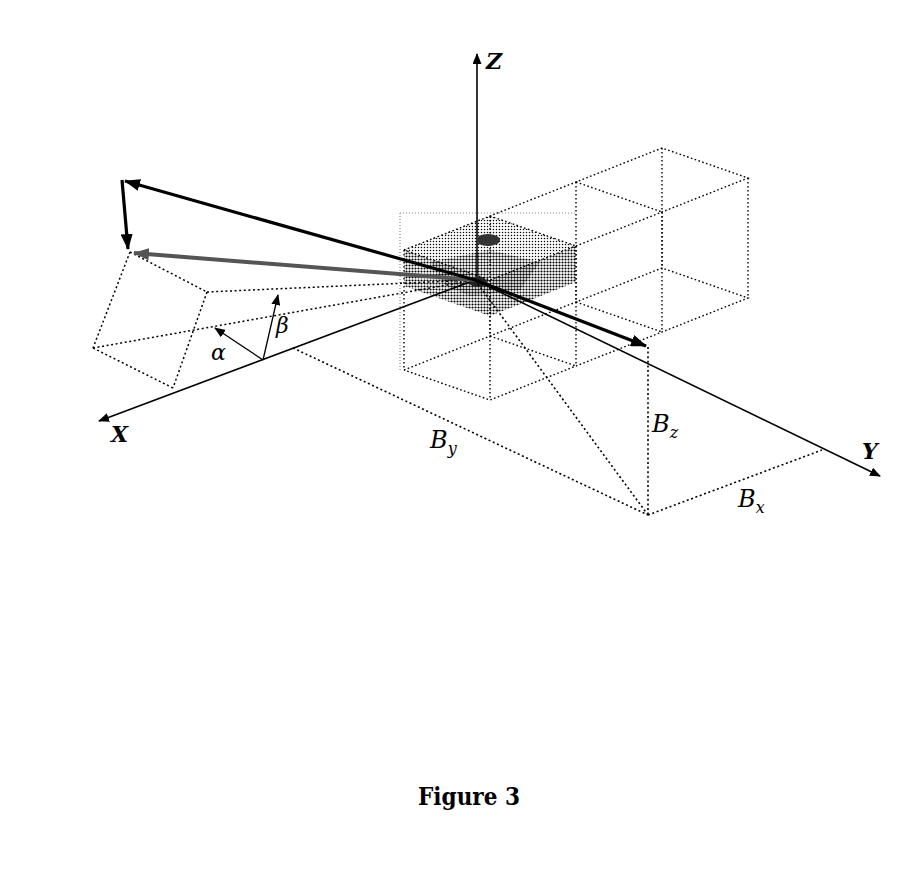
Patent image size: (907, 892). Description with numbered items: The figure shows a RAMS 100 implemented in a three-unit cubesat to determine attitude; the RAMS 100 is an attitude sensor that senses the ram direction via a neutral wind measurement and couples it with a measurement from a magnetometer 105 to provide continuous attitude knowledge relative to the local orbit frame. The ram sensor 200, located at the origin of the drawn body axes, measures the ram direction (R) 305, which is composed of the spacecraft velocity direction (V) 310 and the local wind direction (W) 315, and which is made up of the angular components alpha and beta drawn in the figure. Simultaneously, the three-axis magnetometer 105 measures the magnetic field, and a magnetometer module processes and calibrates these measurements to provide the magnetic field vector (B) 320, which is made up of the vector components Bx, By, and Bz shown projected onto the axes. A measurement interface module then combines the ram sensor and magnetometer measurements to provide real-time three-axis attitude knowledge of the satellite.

The RAMS 100 is at (540, 245).
The magnetometer 105 is at (471, 229).
The ram sensor 200 is at (497, 276).
The ram direction (R) 305 is at (304, 253).
The spacecraft velocity direction (V) 310 is at (300, 230).
The local wind direction (W) 315 is at (89, 214).
The magnetic field vector (B) 320 is at (586, 320).